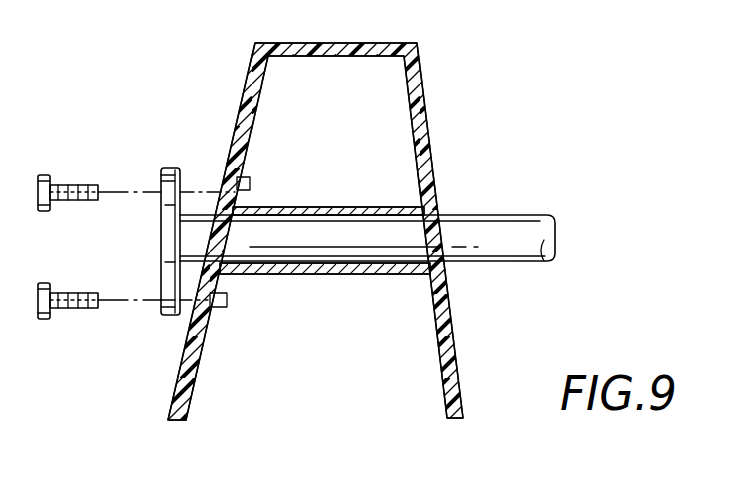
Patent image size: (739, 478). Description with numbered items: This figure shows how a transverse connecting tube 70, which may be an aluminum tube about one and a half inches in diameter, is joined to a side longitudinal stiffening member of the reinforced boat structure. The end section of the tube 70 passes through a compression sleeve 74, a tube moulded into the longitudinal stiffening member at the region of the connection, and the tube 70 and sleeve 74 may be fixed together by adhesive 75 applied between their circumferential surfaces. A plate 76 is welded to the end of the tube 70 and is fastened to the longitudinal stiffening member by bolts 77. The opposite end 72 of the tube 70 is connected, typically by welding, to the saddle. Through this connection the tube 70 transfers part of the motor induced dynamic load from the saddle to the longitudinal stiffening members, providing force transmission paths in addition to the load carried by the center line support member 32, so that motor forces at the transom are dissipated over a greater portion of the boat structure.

The center line support member 32 is at (436, 133).
The transverse connecting tube 70 is at (480, 214).
The end of tube 72 is at (307, 232).
The compression sleeve 74 is at (390, 277).
The adhesive 75 is at (320, 206).
The plate 76 is at (158, 250).
The bolts 77 is at (74, 184).